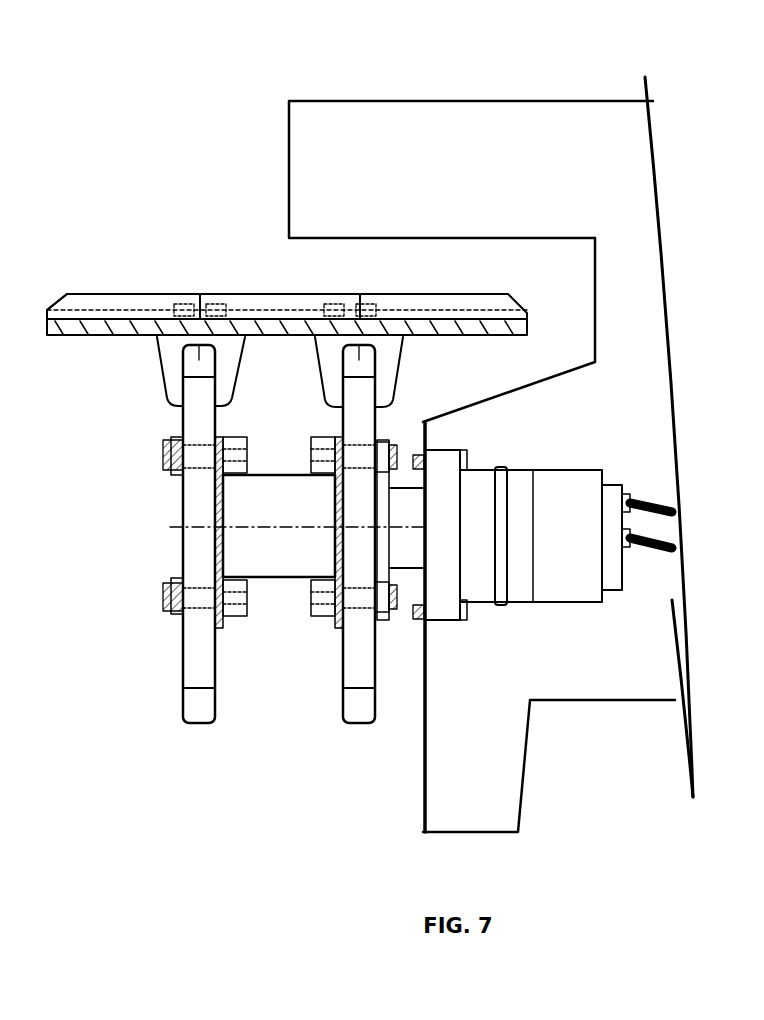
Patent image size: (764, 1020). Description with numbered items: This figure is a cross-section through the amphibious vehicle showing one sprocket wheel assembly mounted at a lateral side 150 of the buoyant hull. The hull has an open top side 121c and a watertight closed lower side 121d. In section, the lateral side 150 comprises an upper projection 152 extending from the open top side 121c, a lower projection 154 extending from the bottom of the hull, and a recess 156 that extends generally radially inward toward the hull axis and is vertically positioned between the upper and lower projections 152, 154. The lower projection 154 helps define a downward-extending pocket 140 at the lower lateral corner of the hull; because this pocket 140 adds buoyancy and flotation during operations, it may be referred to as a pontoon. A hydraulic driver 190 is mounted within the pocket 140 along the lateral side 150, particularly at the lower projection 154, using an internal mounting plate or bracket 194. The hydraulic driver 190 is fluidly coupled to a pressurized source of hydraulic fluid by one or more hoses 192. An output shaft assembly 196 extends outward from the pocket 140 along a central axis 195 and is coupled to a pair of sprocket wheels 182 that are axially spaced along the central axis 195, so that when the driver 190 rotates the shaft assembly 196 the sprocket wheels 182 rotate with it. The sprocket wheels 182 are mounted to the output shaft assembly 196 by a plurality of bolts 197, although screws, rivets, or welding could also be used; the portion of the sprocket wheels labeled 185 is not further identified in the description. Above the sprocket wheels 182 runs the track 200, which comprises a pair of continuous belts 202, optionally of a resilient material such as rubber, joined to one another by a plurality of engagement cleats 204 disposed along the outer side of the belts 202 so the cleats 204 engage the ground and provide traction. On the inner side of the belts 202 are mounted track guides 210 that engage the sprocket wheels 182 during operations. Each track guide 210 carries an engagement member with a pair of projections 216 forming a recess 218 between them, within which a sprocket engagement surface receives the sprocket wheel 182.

The open top side 121c is at (527, 92).
The closed lower side 121d is at (660, 762).
The pocket 140 is at (495, 713).
The lateral side 150 is at (372, 488).
The upper projection 152 is at (287, 131).
The lower projection 154 is at (420, 770).
The recess 156 is at (552, 272).
The sprocket wheel 182 is at (235, 557).
The support bar end cap 185 is at (194, 724).
The hydraulic driver 190 is at (553, 470).
The hose 192 is at (660, 495).
The mounting bracket 194 is at (468, 485).
The central axis 195 is at (238, 527).
The output shaft assembly 196 is at (268, 476).
The bolt 197 is at (170, 448).
The track 200 is at (257, 292).
The belt 202 is at (90, 335).
The engagement cleat 204 is at (60, 302).
The track guide 210 is at (286, 335).
The projection 216 is at (165, 380).
The recess 218 is at (218, 366).